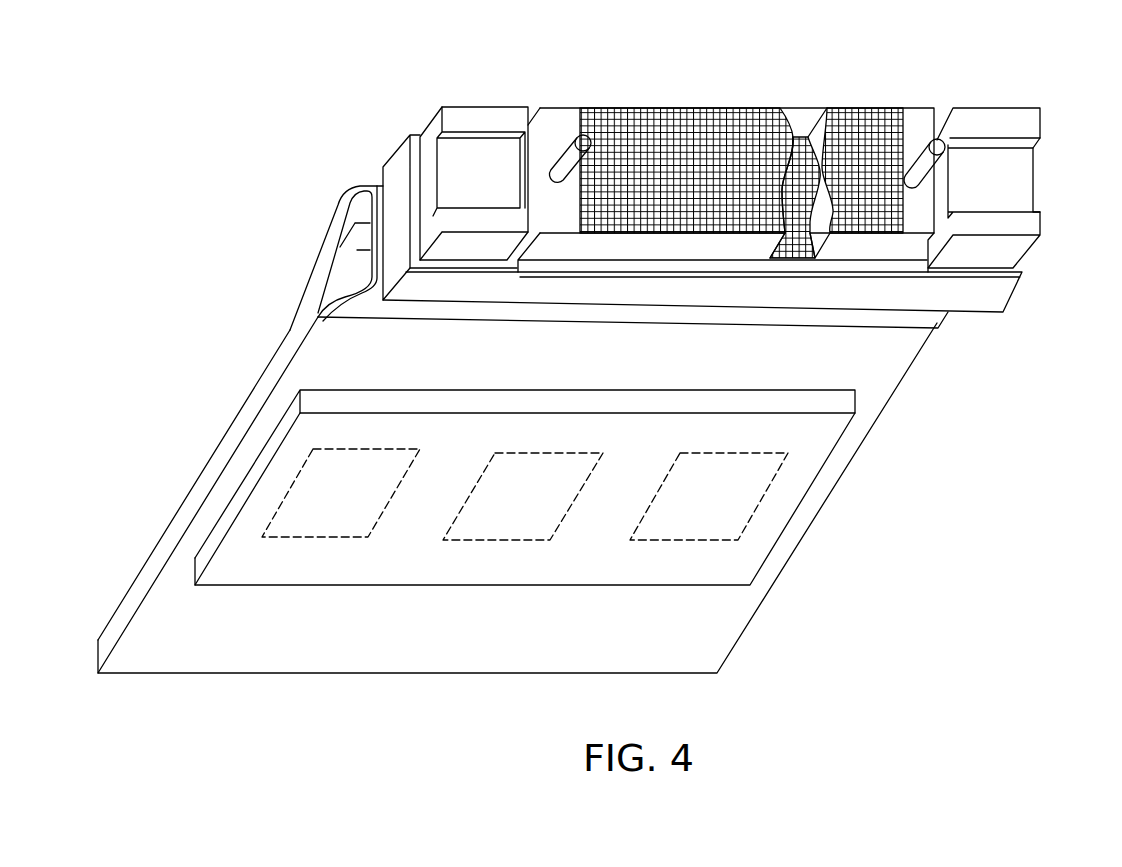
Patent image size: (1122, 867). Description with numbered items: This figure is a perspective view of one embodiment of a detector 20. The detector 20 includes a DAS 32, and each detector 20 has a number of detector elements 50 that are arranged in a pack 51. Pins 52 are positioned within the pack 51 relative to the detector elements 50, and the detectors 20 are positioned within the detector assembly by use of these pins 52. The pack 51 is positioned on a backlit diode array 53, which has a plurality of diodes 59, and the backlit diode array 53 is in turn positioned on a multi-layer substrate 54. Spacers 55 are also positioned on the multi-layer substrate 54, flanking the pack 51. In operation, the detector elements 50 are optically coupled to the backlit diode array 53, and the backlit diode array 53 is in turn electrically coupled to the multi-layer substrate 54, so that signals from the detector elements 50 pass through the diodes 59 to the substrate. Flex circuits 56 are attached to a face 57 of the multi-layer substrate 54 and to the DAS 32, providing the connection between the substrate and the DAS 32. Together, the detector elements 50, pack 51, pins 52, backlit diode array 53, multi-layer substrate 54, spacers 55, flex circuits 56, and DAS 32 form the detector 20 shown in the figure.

The detector 20 is at (982, 69).
The DAS 32 is at (833, 465).
The detector elements 50 is at (650, 108).
The pack 51 is at (587, 84).
The pins 52 is at (562, 143).
The backlit diode array 53 is at (903, 262).
The multi-layer substrate 54 is at (1002, 297).
The spacers 55 is at (482, 104).
The flex circuits 56 is at (345, 288).
The face 57 is at (383, 175).
The diodes 59 is at (800, 137).